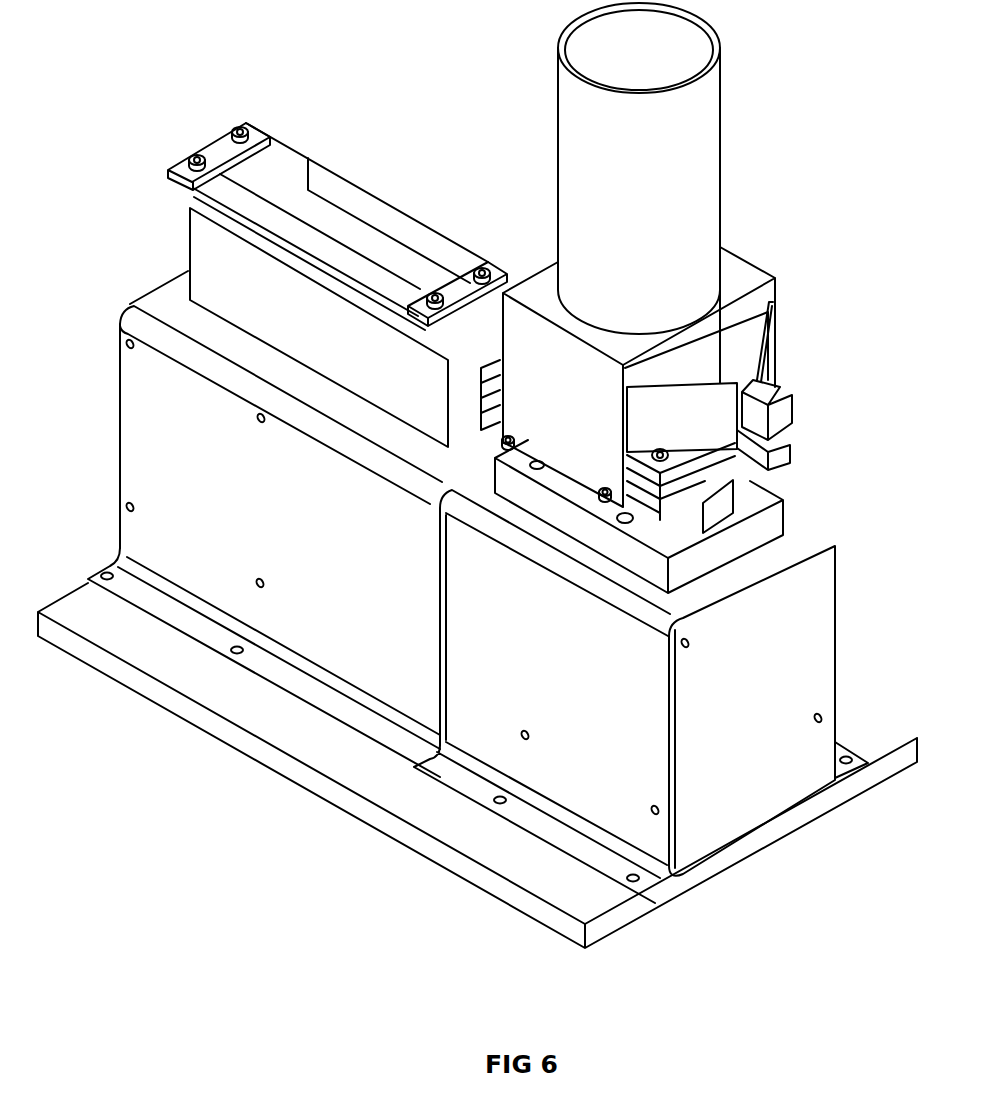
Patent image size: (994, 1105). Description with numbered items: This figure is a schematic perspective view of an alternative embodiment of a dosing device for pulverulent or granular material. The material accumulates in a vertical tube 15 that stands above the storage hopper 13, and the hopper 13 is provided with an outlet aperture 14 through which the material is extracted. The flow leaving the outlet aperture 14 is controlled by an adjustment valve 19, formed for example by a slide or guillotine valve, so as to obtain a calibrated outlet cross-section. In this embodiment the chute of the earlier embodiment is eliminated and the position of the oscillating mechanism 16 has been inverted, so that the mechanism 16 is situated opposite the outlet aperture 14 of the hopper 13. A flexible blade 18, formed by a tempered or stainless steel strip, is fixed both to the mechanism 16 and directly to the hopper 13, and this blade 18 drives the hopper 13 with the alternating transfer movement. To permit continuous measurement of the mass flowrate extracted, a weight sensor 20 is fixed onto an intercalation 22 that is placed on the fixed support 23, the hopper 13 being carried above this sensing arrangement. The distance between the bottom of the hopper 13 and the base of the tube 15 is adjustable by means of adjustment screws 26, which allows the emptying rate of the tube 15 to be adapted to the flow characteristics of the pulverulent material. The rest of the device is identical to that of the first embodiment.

The storage hopper 13 is at (745, 344).
The outlet aperture 14 is at (776, 436).
The vertical tube 15 is at (693, 192).
The oscillating mechanism 16 is at (221, 258).
The flexible blade 18 is at (375, 245).
The adjustment valve 19 is at (777, 388).
The weight sensor 20 is at (718, 502).
The intercalation 22 is at (604, 538).
The fixed support 23 is at (803, 688).
The adjustment screws 26 is at (612, 482).